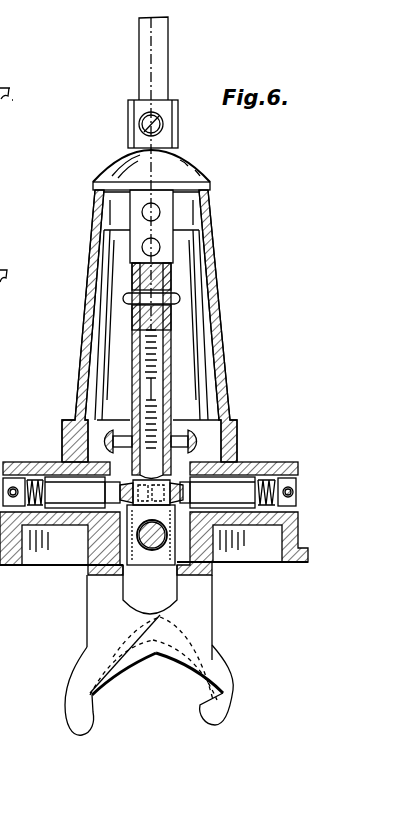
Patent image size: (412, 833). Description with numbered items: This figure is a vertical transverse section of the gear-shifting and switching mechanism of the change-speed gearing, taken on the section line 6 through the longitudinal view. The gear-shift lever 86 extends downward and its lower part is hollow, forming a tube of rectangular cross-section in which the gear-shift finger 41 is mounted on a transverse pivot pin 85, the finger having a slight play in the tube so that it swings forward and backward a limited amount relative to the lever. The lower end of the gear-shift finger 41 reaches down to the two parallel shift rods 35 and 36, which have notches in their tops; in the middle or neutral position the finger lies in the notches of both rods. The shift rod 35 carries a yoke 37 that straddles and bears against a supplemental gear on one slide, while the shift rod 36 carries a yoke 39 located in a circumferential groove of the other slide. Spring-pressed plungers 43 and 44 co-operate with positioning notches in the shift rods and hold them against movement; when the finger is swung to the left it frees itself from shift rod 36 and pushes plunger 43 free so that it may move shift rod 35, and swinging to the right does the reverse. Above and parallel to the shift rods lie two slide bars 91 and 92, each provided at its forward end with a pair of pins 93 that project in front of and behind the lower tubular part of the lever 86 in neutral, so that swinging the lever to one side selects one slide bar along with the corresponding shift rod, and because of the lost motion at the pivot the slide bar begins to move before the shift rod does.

The section line 6— 6 is at (180, 48).
The gear-shift lever 86 is at (140, 74).
The transverse pivot pin 85 is at (176, 305).
The gear-shift finger 41 is at (160, 382).
The pins 93 is at (120, 430).
The slide bar 91 is at (98, 442).
The slide bar 92 is at (203, 443).
The spring-pressed plunger 44 is at (253, 465).
The spring-pressed plunger 43 is at (68, 507).
The shift rod 35 is at (90, 570).
The shift rod 36 is at (210, 571).
The yoke 37 is at (68, 725).
The yoke 39 is at (207, 722).